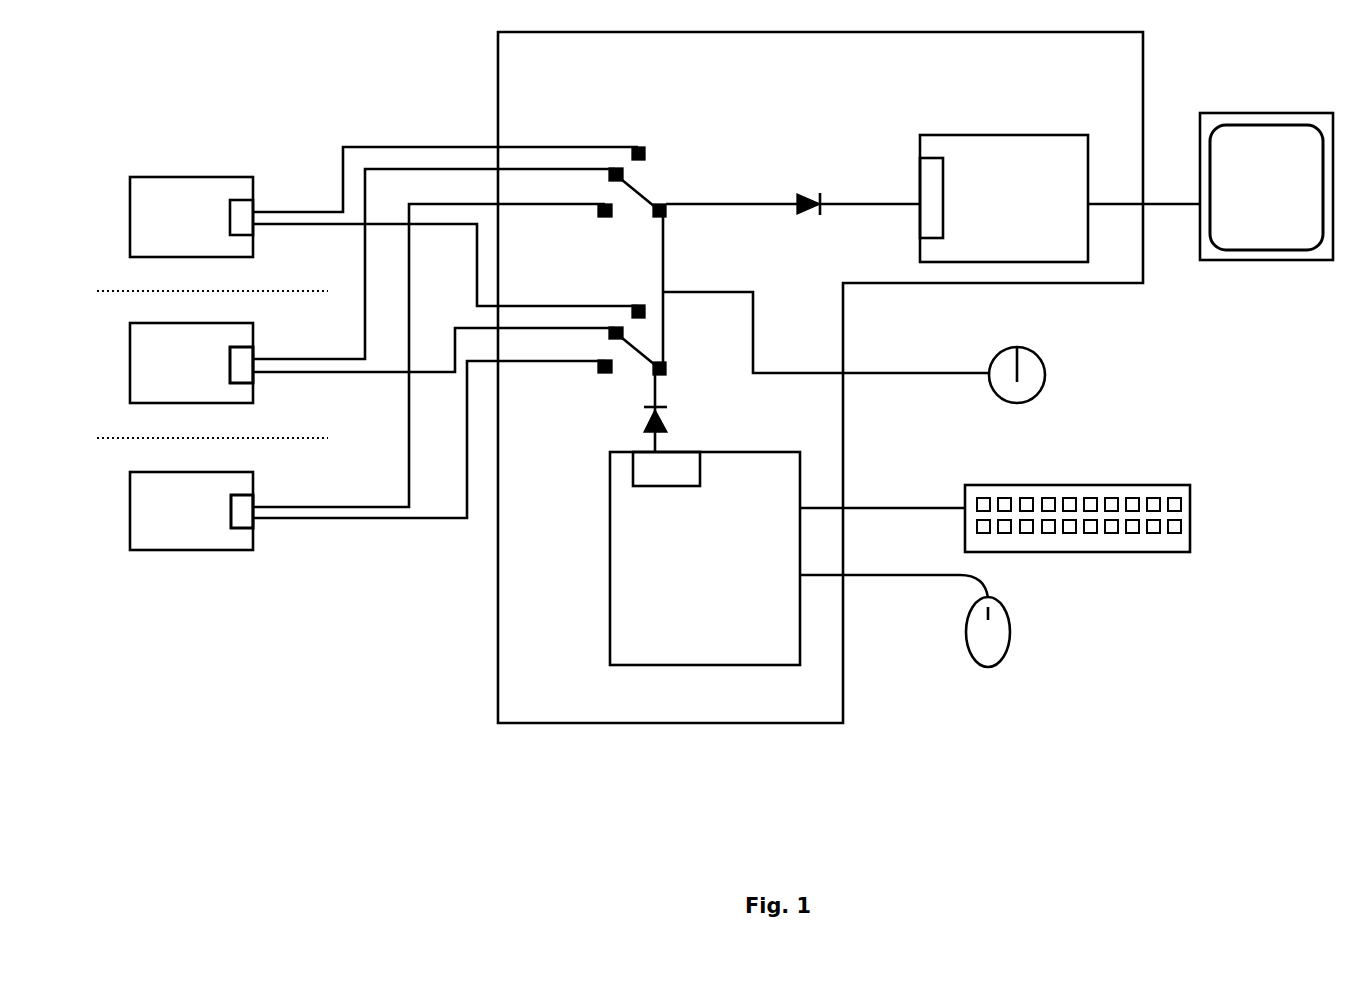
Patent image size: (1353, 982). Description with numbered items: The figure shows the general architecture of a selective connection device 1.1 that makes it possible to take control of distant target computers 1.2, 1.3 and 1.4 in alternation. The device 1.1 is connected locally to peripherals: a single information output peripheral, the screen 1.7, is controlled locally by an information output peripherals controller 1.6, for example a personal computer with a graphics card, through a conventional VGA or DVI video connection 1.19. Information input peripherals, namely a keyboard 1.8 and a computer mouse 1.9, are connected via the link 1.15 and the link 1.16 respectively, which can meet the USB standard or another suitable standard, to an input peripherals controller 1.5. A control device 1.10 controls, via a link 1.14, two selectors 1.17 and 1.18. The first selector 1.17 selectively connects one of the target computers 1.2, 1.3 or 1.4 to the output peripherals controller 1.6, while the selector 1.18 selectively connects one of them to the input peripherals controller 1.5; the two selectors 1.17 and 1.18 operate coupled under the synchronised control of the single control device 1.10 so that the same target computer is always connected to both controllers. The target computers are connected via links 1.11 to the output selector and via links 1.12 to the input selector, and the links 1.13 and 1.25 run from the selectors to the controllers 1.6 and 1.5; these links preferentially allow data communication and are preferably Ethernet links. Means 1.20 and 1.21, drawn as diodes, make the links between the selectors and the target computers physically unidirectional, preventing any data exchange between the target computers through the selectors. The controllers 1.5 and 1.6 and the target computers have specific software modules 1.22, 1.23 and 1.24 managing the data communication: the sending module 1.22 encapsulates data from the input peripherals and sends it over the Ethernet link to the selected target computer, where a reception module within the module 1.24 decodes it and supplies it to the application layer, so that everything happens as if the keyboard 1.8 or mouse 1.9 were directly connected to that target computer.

The selective connection device 1.1 is at (820, 377).
The target computer 1.2 is at (191, 217).
The target computer 1.3 is at (191, 363).
The target computer 1.4 is at (191, 511).
The input peripherals controller 1.5 is at (705, 558).
The information output peripherals controller 1.6 is at (1004, 198).
The screen 1.7 is at (1265, 110).
The keyboard 1.8 is at (1048, 485).
The computer mouse 1.9 is at (1010, 632).
The control device 1.10 is at (1017, 347).
The links 1.11 is at (360, 503).
The links 1.12 is at (453, 224).
The link 1.13 is at (778, 198).
The link 1.14 is at (757, 350).
The link 1.15 is at (878, 508).
The link 1.16 is at (887, 574).
The first selector 1.17 is at (658, 200).
The selector 1.18 is at (650, 370).
The display line 1.19 is at (1160, 203).
The means for making links physically unidirectional 1.20 is at (810, 198).
The means for making links physically unidirectional 1.21 is at (665, 420).
The sending module 1.22 is at (665, 487).
The software module 1.23 is at (943, 197).
The software module 1.24 is at (237, 493).
The link 1.25 is at (657, 393).